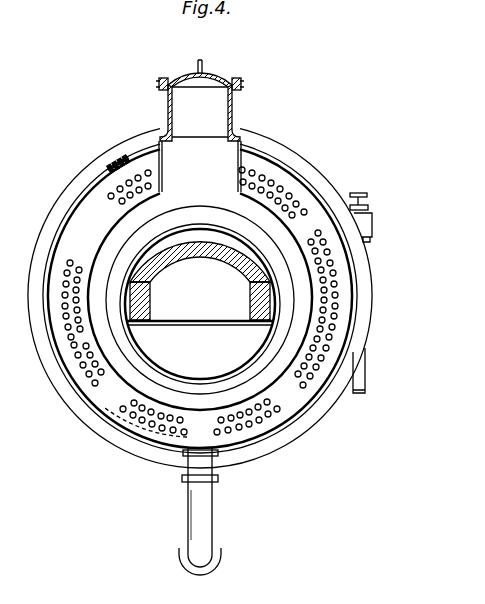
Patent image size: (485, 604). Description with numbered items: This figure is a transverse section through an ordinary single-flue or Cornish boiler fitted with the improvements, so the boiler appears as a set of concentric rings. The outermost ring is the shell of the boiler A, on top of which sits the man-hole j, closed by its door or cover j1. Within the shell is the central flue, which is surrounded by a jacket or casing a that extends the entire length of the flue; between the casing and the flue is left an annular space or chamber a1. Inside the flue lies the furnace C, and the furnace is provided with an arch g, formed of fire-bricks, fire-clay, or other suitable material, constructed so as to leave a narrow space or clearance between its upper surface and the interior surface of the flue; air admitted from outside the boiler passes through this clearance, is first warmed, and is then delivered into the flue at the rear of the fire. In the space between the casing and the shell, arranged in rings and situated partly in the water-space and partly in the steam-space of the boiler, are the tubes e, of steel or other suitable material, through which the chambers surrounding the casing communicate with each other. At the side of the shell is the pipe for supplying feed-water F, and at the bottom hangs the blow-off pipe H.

The shell of the boiler A is at (200, 298).
The man-hole j is at (200, 107).
The door or cover j1 is at (215, 62).
The jacket or casing a is at (199, 226).
The annular space or chamber a1 is at (254, 254).
The tubes e is at (78, 277).
The furnace C is at (200, 294).
The arch g is at (200, 262).
The pipe for supplying feed-water F is at (367, 370).
The blow-off pipe H is at (200, 511).